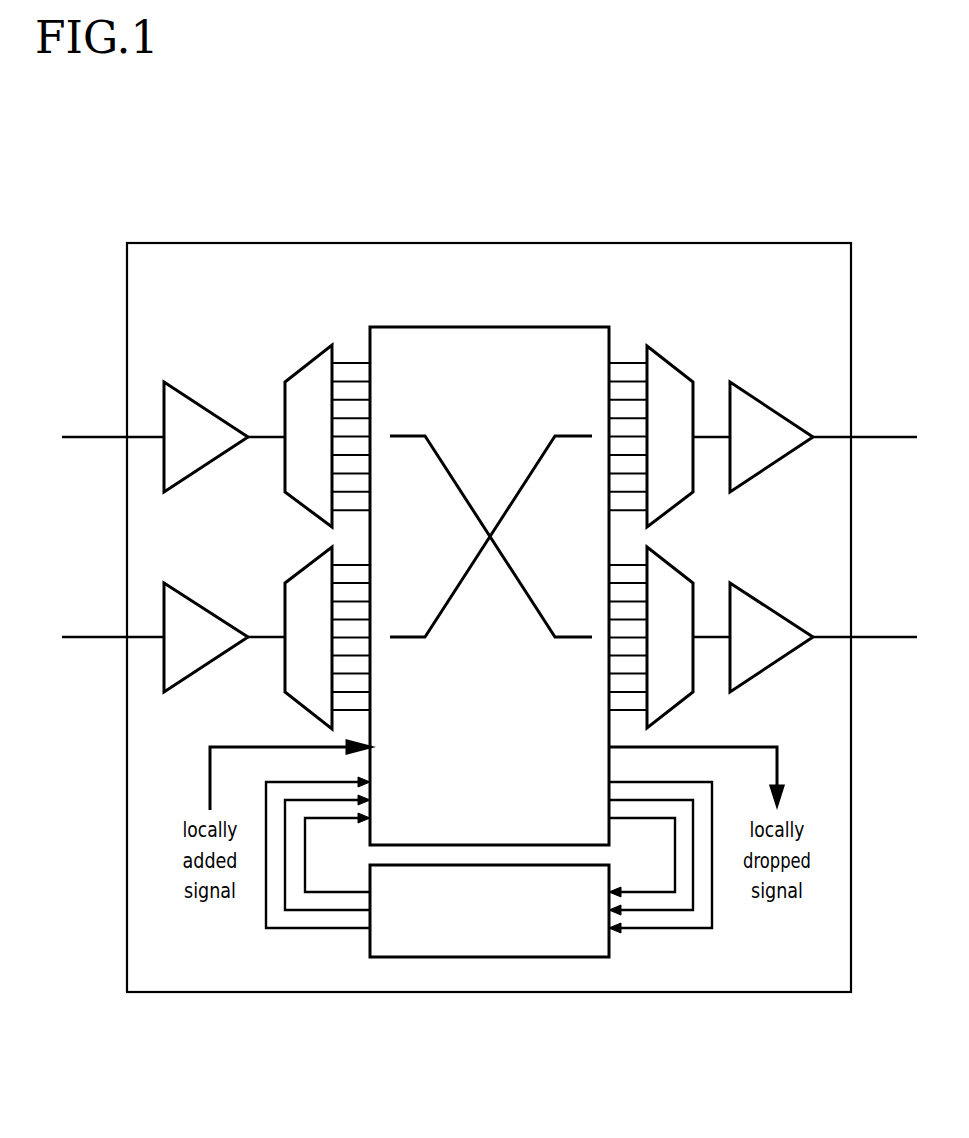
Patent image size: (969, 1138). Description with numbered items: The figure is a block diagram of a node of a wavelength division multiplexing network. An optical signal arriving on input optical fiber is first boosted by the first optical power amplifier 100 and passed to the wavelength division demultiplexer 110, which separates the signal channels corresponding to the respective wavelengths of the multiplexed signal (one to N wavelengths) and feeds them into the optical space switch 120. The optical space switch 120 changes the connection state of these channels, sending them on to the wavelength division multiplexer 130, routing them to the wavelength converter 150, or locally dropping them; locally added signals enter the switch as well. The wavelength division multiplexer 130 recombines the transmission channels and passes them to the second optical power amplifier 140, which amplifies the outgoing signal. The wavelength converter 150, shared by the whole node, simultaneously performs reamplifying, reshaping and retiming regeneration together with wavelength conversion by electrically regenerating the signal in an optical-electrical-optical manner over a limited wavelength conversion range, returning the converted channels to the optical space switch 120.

The first optical power amplifier 100 is at (203, 404).
The wavelength division demultiplexer 110 is at (305, 367).
The optical space switch 120 is at (575, 327).
The wavelength division multiplexer 130 is at (672, 363).
The second optical power amplifier 140 is at (770, 402).
The 3R wavelength converter 150 is at (520, 958).